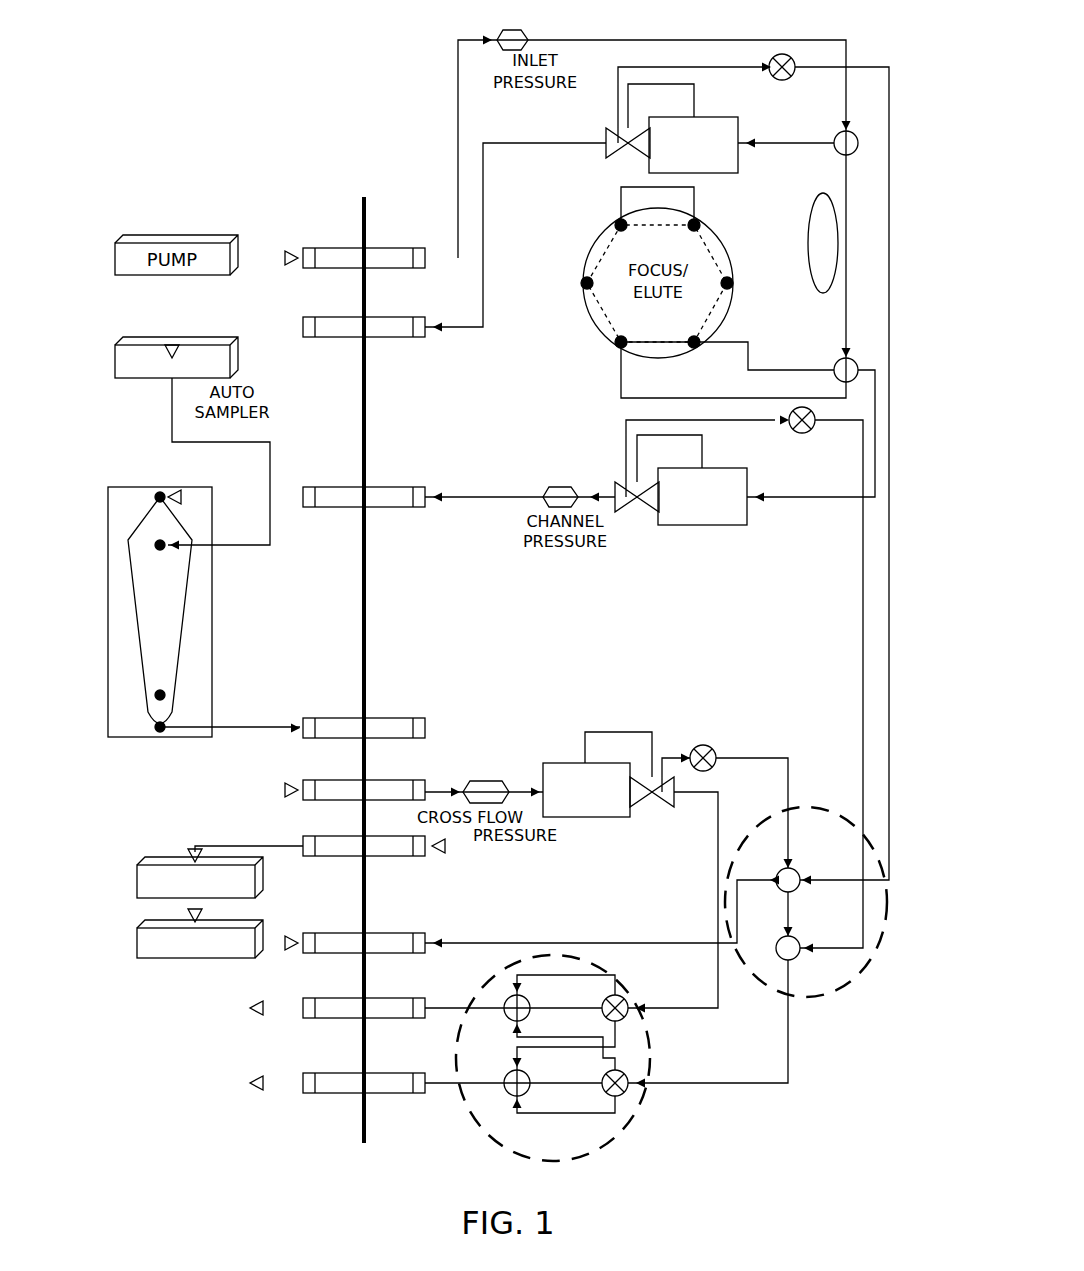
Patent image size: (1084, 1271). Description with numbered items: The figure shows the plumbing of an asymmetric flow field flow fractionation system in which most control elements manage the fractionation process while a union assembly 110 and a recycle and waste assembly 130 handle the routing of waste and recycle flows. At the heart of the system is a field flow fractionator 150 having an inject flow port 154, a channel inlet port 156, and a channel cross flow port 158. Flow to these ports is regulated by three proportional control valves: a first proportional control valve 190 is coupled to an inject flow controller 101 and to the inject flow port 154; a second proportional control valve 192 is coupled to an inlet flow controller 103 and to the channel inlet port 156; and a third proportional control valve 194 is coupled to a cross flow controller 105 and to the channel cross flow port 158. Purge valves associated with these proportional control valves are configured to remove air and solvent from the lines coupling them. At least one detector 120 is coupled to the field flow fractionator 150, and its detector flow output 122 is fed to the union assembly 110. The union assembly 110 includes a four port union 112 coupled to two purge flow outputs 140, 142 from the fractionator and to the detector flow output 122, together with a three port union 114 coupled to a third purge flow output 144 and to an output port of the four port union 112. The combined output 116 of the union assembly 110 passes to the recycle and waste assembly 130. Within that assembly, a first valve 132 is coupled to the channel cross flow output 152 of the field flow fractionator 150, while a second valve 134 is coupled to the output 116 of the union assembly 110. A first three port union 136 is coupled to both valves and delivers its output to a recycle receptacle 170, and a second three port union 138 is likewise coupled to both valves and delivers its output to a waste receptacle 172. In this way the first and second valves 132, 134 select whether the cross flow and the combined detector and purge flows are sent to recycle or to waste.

The inject flow controller 101 is at (716, 117).
The inlet flow controller 103 is at (745, 478).
The cross flow controller 105 is at (565, 763).
The union assembly 110 is at (842, 1000).
The four port union 112 is at (795, 875).
The three port union 114 is at (792, 960).
The output of union assembly 116 is at (738, 1093).
The detector 120 is at (153, 960).
The detector flow output 122 is at (468, 940).
The recycle and waste assembly 130 is at (470, 1105).
The first valve 132 is at (618, 1000).
The second valve 134 is at (618, 1098).
The first three port union 136 is at (500, 995).
The second three port union 138 is at (503, 1097).
The purge flow output 140 is at (893, 72).
The purge flow output 142 is at (866, 645).
The third purge flow output 144 is at (788, 752).
The field flow fractionator 150 is at (108, 482).
The channel cross flow output 152 is at (445, 780).
The inject flow port 154 is at (268, 455).
The channel inlet port 156 is at (290, 495).
The channel cross flow port 158 is at (170, 790).
The recycle receptacle 170 is at (312, 1017).
The waste receptacle 172 is at (305, 1097).
The proportional control valve 190 is at (790, 60).
The proportional control valve 192 is at (812, 412).
The proportional control valve 194 is at (695, 745).